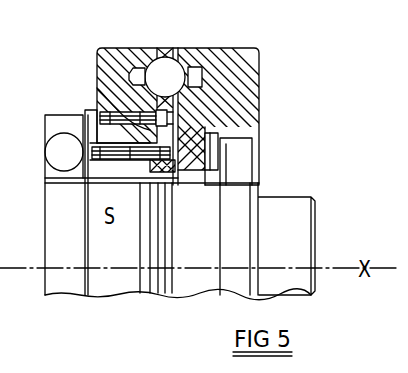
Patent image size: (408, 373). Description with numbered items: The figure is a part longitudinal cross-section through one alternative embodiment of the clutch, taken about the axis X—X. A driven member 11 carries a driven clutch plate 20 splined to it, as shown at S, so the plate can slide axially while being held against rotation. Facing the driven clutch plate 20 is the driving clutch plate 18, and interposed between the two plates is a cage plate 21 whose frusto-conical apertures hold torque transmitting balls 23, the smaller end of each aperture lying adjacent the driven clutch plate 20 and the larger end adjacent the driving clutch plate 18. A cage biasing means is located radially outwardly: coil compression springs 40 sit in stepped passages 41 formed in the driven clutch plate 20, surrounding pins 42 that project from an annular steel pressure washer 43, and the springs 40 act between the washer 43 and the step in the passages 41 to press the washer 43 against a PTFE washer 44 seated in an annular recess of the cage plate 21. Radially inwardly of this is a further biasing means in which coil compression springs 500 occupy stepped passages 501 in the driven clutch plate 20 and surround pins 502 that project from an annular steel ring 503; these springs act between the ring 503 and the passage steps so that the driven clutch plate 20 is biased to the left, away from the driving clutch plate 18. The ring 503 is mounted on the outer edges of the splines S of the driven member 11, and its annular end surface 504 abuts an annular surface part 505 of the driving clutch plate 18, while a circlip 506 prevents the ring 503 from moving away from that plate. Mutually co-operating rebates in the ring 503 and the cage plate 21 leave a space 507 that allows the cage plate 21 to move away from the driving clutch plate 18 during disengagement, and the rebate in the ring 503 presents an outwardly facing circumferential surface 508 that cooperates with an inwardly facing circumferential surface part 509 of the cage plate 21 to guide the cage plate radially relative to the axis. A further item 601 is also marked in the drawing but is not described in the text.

The driven member 11 is at (200, 275).
The driving clutch plate 18 is at (256, 48).
The driven clutch plate 20 is at (101, 48).
The cage plate 21 is at (160, 48).
The balls 23 is at (170, 72).
The coil compression springs 40 is at (108, 100).
The stepped passages 41 is at (123, 128).
The pins 42 is at (104, 98).
The annular steel pressure ring or washer 43 is at (168, 147).
The PTFE washer 44 is at (170, 110).
The coil compression springs 500 is at (100, 184).
The stepped passages 501 is at (113, 180).
The pins 502 is at (82, 186).
The annular steel ring 503 is at (157, 195).
The annular end surface 504 is at (167, 187).
The annular surface part 505 is at (173, 168).
The circlip 506 is at (147, 190).
The space 507 is at (172, 165).
The outwardly facing circumferential surface 508 is at (172, 195).
The inwardly facing circumferential surface part 509 is at (178, 166).
The part 601 is at (0, 360).